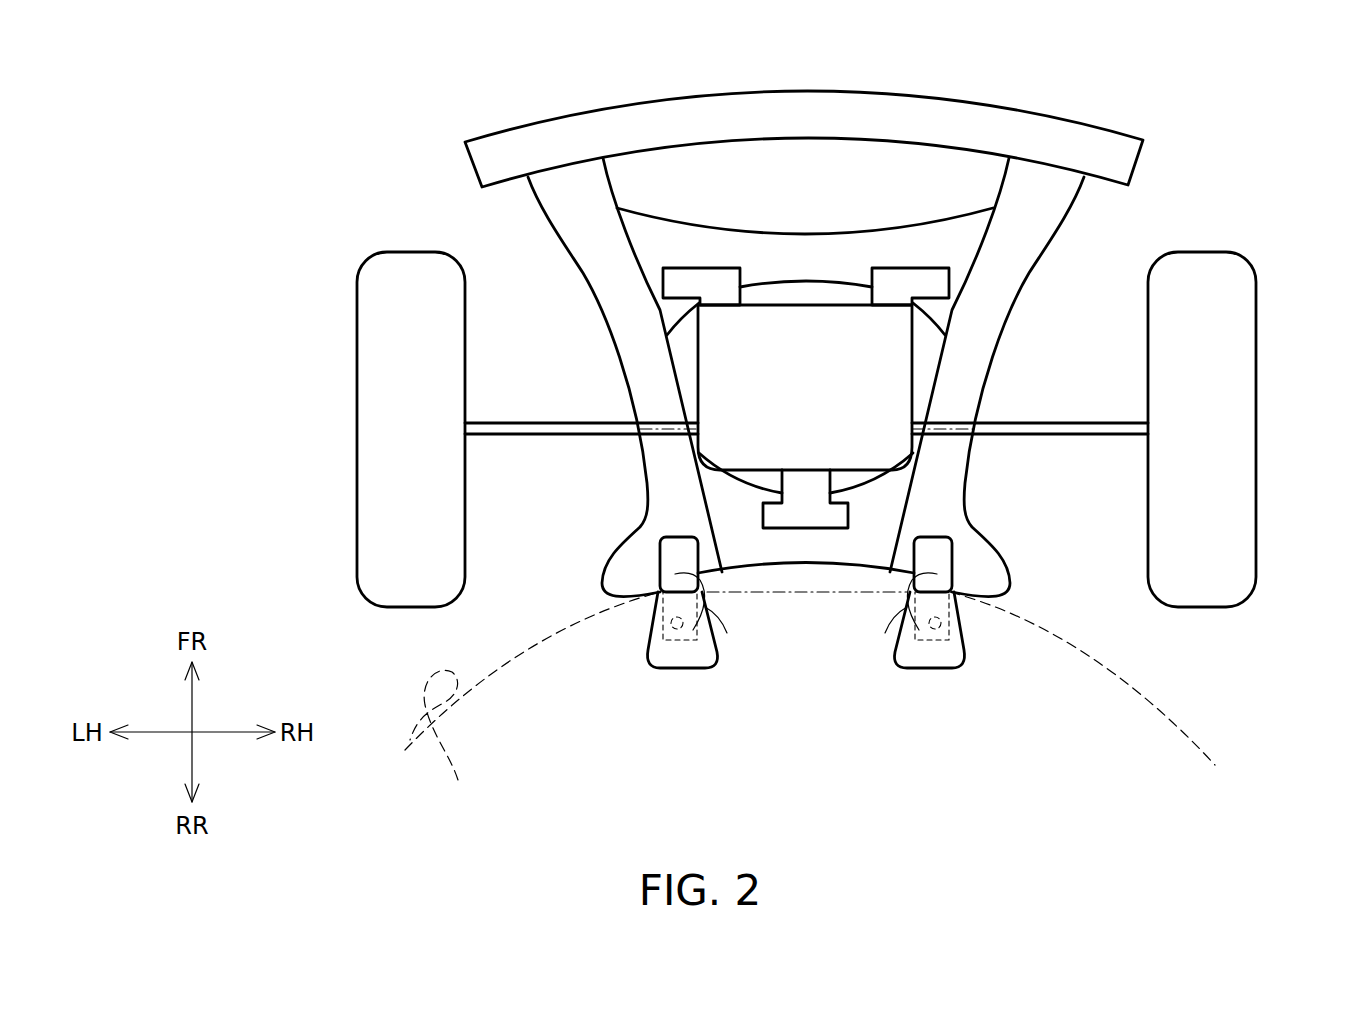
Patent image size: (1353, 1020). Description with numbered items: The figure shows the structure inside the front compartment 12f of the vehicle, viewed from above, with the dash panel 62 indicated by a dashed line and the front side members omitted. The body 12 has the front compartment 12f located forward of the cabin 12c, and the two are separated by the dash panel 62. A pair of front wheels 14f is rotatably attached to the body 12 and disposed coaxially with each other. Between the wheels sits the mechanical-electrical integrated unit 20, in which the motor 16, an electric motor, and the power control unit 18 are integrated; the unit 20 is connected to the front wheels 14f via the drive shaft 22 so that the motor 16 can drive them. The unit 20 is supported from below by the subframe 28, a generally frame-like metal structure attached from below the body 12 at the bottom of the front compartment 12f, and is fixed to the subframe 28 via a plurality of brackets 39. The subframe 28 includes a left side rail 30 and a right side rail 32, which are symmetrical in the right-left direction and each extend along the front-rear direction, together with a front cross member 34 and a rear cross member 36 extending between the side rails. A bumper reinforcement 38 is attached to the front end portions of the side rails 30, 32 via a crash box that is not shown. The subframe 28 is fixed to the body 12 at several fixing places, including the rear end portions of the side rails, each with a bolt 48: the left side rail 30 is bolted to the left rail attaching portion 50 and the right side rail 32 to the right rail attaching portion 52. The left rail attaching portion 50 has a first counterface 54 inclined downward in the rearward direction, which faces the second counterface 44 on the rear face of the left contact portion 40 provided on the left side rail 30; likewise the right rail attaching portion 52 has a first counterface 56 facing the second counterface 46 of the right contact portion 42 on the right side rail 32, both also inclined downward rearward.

The body 12 is at (1232, 675).
The cabin 12c is at (555, 740).
The front compartment 12f is at (1077, 480).
The front wheels 14f is at (372, 428).
The motor 16 is at (570, 384).
The power control unit 18 is at (570, 384).
The mechanical-electrical integrated unit 20 is at (723, 377).
The drive shaft 22 is at (1062, 430).
The subframe 28 is at (1017, 317).
The left side rail 30 is at (610, 280).
The right side rail 32 is at (1003, 278).
The front cross member 34 is at (930, 243).
The rear cross member 36 is at (795, 552).
The bumper reinforcement 38 is at (698, 108).
The brackets 39 is at (899, 280).
The left contact portion 40 is at (660, 567).
The right contact portion 42 is at (953, 567).
The second counterface 44 is at (657, 655).
The second counterface 46 is at (955, 655).
The bolt 48 is at (655, 632).
The left rail attaching portion 50 is at (727, 633).
The right rail attaching portion 52 is at (885, 633).
The first counterface 54 is at (693, 630).
The first counterface 56 is at (919, 630).
The dash panel 62 is at (442, 742).